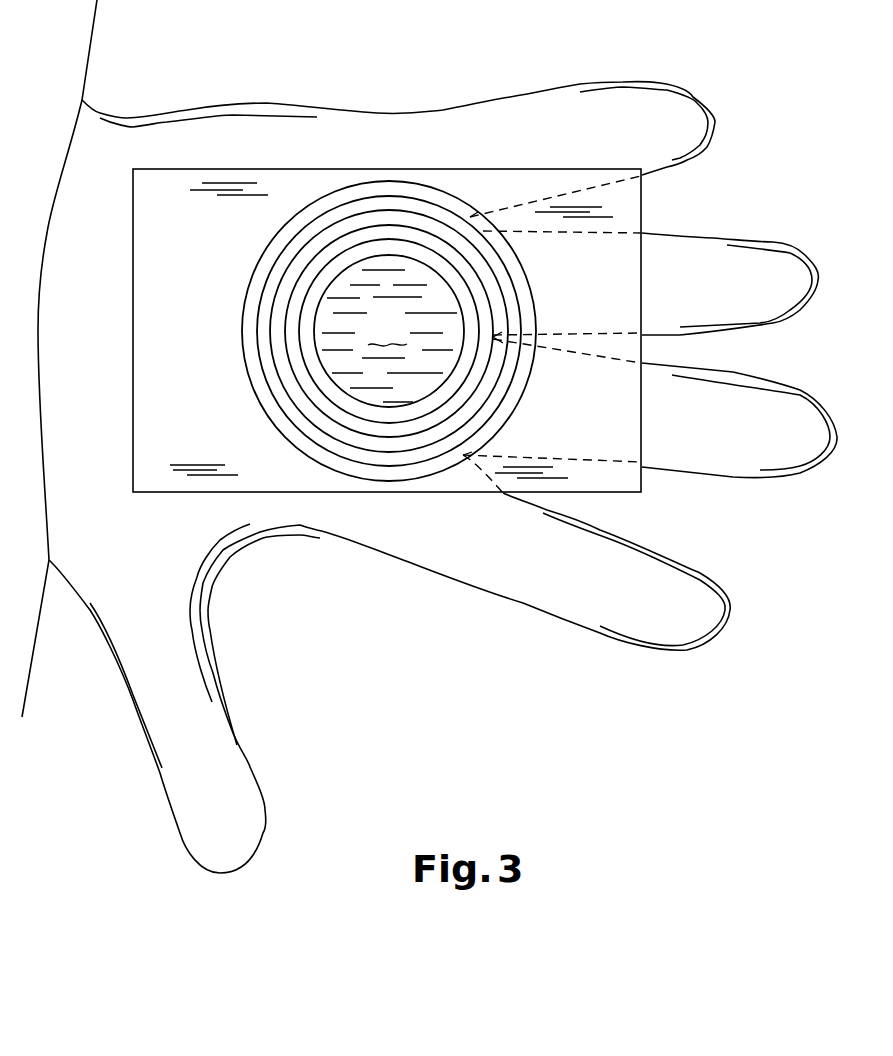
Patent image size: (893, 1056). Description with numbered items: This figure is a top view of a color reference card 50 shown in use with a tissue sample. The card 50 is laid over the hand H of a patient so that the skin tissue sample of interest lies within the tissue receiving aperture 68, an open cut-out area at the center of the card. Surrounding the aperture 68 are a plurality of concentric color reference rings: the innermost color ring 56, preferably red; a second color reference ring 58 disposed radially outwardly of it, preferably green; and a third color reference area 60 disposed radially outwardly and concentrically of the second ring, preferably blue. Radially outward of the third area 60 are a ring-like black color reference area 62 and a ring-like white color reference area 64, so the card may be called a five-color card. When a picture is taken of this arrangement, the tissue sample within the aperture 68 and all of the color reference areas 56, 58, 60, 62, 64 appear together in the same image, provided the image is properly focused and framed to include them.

The color reference card 50 is at (487, 150).
The innermost color ring 56 is at (325, 383).
The second color reference ring 58 is at (288, 340).
The third color reference area 60 is at (293, 267).
The black color reference area 62 is at (422, 210).
The white color reference area 64 is at (365, 474).
The tissue receiving aperture 68 is at (383, 257).
The hand H is at (525, 601).